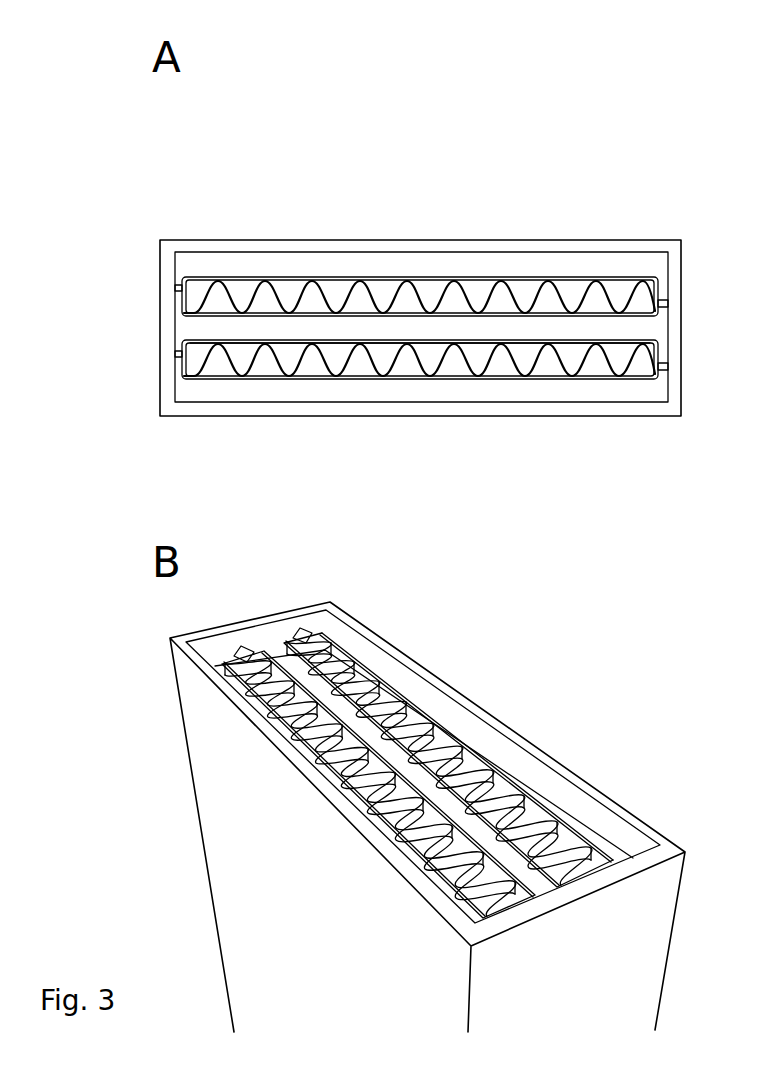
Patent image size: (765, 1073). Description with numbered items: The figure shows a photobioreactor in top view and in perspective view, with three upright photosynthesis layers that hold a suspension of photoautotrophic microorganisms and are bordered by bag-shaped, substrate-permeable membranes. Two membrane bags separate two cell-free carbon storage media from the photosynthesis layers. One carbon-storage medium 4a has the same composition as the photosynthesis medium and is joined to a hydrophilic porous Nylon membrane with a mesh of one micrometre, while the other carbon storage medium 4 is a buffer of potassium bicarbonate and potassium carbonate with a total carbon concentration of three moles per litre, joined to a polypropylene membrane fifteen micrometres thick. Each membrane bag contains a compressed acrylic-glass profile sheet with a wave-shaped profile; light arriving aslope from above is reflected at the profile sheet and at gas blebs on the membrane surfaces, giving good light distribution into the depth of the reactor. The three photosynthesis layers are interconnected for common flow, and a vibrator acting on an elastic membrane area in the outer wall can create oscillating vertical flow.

The carbon-storage medium 4a is at (337, 297).
The carbon storage medium 4 is at (433, 360).